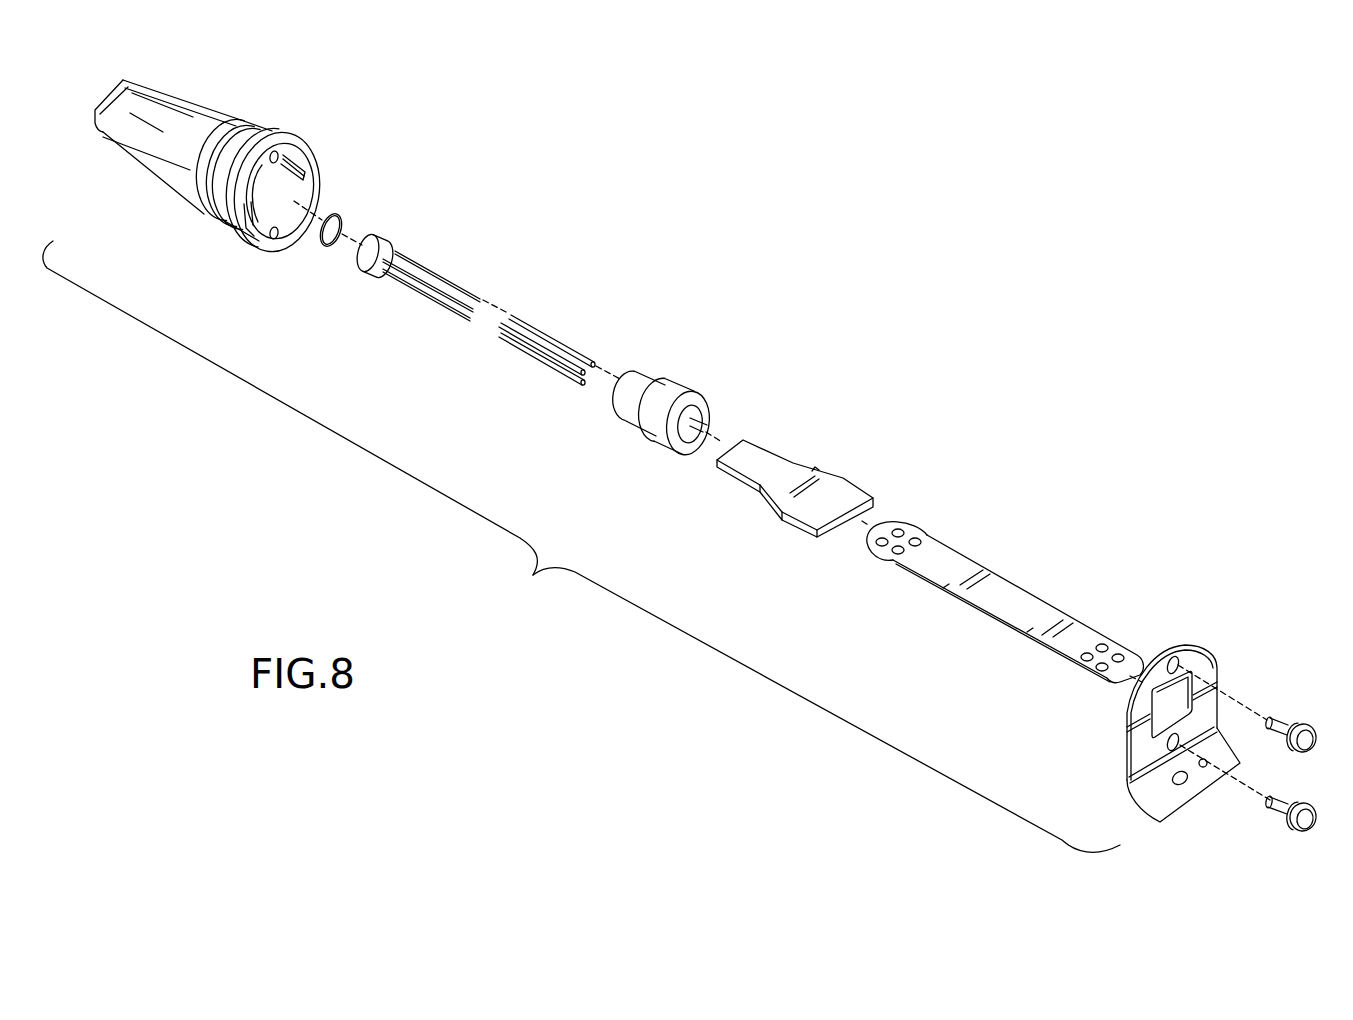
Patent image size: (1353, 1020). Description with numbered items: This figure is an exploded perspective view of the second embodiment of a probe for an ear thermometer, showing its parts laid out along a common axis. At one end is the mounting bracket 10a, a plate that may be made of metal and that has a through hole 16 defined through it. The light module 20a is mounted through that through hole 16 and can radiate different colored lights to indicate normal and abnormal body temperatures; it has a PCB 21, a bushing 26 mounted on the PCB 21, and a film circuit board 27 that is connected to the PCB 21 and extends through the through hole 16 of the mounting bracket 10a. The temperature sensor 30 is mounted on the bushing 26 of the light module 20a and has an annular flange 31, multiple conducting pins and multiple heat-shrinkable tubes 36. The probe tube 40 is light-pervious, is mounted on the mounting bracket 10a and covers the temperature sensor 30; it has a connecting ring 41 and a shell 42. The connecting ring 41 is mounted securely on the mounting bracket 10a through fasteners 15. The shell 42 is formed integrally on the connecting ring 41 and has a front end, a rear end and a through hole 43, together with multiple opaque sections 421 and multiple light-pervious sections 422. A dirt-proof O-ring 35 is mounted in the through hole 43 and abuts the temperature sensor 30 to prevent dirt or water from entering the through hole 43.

The mounting bracket 10a is at (1197, 726).
The fasteners 15 is at (1292, 723).
The through hole 16 is at (1165, 710).
The light module 20a is at (924, 551).
The PCB 21 is at (762, 490).
The bushing 26 is at (683, 398).
The film circuit board 27 is at (1017, 593).
The temperature sensor 30 is at (470, 283).
The annular flange 31 is at (375, 275).
The dirt-proof O-ring 35 is at (340, 226).
The heat-shrinkable tubes 36 is at (560, 343).
The probe tube 40 is at (236, 168).
The connecting ring 41 is at (227, 237).
The shell 42 is at (215, 142).
The through hole 43 is at (260, 198).
The opaque sections 421 is at (203, 112).
The light-pervious sections 422 is at (160, 103).